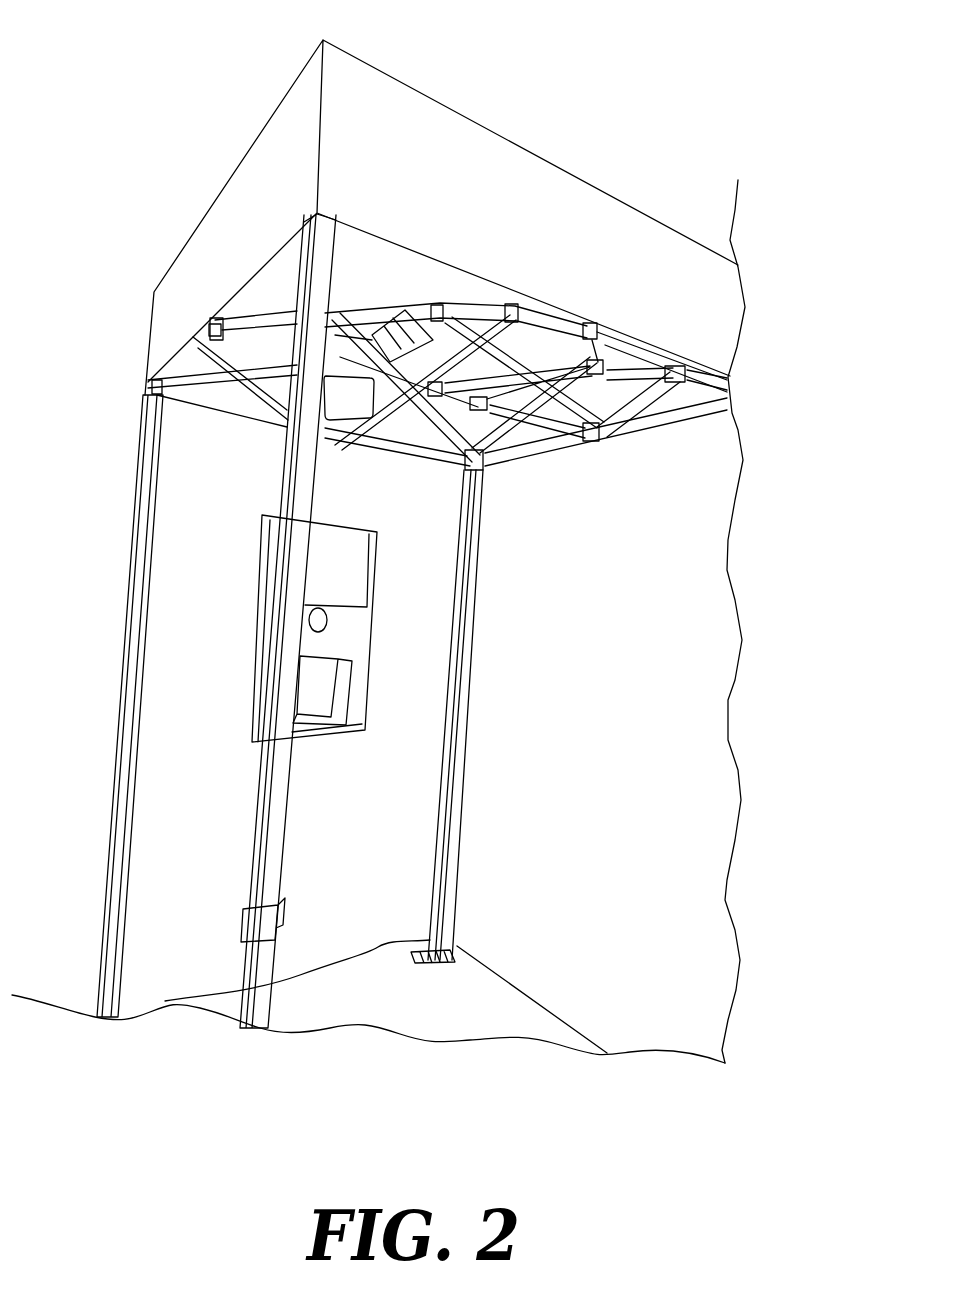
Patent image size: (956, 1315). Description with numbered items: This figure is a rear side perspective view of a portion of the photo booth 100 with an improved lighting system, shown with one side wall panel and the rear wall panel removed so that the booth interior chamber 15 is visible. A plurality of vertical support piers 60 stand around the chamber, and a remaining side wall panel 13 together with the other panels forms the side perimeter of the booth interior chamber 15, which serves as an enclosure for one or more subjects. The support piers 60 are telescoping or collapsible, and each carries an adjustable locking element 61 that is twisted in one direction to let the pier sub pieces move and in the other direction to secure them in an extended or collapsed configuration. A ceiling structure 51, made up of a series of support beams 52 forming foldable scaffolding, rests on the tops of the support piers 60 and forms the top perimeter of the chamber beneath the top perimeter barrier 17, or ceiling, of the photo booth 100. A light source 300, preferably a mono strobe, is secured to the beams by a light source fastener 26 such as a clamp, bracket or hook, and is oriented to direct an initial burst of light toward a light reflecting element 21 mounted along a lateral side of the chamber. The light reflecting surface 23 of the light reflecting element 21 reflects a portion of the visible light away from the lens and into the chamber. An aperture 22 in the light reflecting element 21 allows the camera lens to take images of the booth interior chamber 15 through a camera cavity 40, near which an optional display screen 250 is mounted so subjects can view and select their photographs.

The photo booth 100 is at (88, 78).
The top perimeter barrier 17 is at (418, 122).
The side wall panel 13 is at (660, 733).
The booth interior chamber 15 is at (593, 665).
The light reflecting element 21 is at (160, 855).
The aperture 22 is at (255, 715).
The light reflecting surface 23 is at (322, 900).
The light source fastener 26 is at (388, 318).
The camera cavity 40 is at (313, 622).
The ceiling structure 51 is at (537, 318).
The support beams 52 is at (217, 320).
The vertical support piers 60 is at (135, 540).
The adjustable locking element 61 is at (125, 730).
The display screen 250 is at (338, 588).
The light source 300 is at (358, 412).